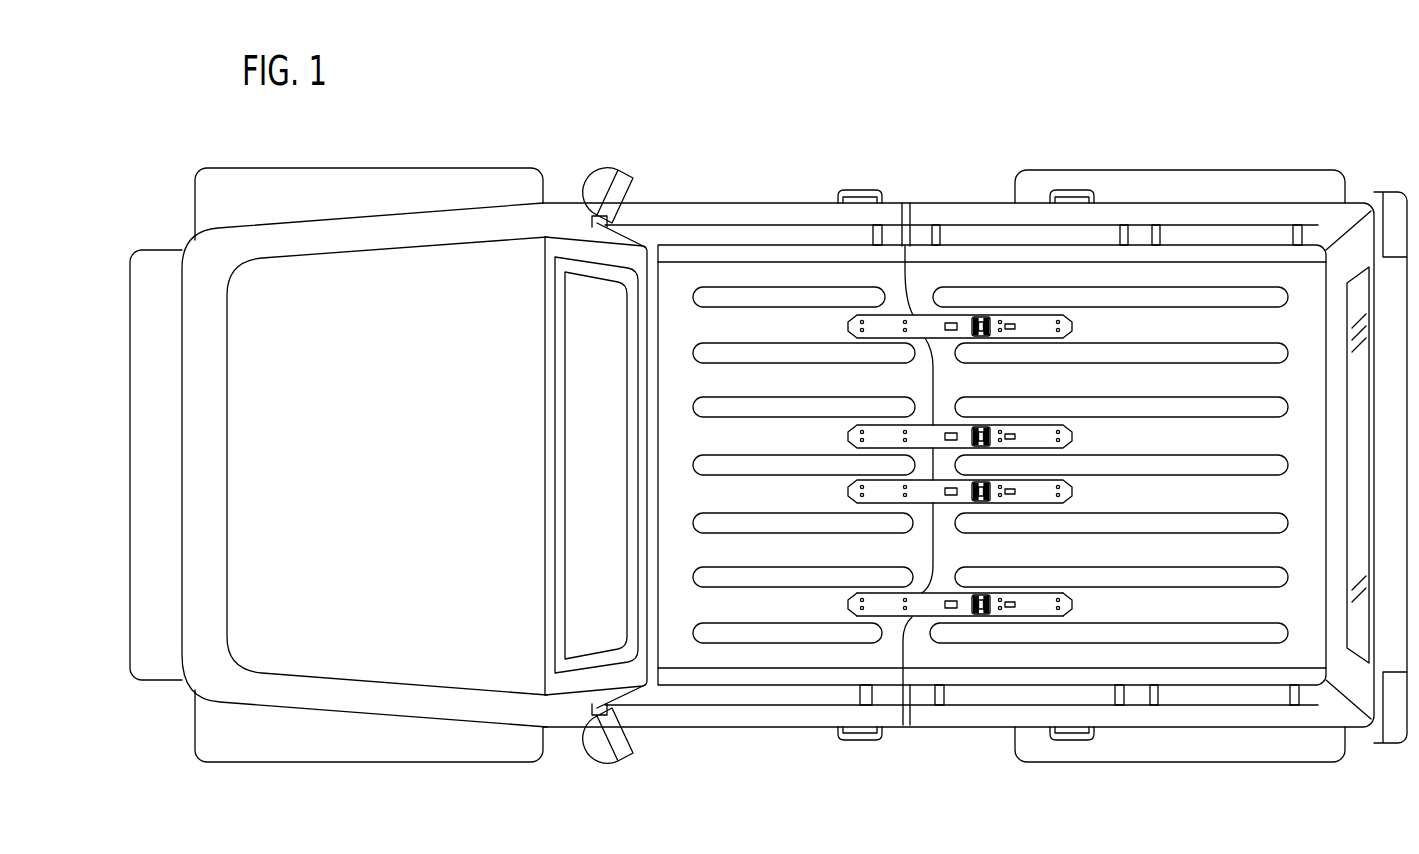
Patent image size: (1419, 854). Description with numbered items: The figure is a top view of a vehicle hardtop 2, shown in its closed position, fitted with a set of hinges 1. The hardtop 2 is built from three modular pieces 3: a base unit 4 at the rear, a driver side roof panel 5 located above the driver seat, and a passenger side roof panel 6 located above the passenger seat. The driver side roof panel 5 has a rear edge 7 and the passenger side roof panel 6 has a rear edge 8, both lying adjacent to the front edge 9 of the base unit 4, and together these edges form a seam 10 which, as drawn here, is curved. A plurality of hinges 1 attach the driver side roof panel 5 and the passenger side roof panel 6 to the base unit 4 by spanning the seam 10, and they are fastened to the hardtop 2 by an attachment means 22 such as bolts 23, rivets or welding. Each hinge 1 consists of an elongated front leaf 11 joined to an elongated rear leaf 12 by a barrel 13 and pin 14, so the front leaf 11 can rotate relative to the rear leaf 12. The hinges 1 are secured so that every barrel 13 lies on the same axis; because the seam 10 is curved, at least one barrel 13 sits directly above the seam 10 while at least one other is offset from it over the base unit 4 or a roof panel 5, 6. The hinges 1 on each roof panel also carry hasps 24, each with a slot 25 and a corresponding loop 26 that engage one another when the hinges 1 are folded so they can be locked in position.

The hinge 1 is at (843, 277).
The hardtop 2 is at (992, 484).
The modular pieces 3 is at (990, 484).
The base unit 4 is at (1130, 657).
The driver side roof panel 5 is at (737, 657).
The passenger side roof panel 6 is at (740, 277).
The rear edge 7 is at (906, 650).
The rear edge 8 is at (907, 277).
The front edge 9 is at (930, 386).
The seam 10 is at (930, 546).
The front leaf 11 is at (847, 605).
The rear leaf 12 is at (1065, 604).
The barrel 13 is at (981, 618).
The pin 14 is at (983, 593).
The attachment means 22 is at (838, 697).
The bolts 23 is at (858, 618).
The hasp 24 is at (915, 465).
The slot 25 is at (945, 327).
The loop 26 is at (1012, 328).